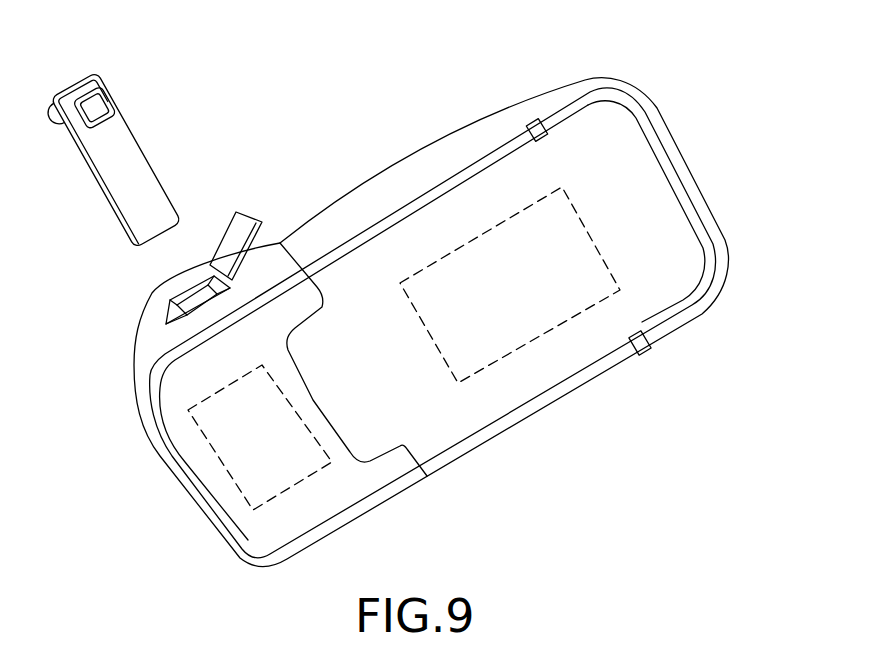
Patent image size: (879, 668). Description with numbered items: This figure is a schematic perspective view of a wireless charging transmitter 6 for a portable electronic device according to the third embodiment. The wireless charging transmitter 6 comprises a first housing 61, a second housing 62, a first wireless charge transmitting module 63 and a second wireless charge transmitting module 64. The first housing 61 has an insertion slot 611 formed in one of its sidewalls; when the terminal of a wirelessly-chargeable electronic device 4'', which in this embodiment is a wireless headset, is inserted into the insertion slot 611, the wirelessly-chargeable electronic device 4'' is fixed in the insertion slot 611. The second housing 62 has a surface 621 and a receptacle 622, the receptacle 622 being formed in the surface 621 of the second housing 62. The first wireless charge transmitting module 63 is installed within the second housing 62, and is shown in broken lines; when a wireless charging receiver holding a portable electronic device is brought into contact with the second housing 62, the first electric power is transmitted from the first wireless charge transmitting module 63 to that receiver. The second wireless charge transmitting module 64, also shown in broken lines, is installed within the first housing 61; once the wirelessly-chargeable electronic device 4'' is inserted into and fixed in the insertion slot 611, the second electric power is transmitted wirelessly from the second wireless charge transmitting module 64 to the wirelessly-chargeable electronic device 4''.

The wireless charging transmitter 6 is at (590, 63).
The wirelessly-chargeable electronic device 4'' is at (120, 162).
The first housing 61 is at (333, 490).
The insertion slot 611 is at (187, 303).
The second housing 62 is at (597, 333).
The surface 621 is at (657, 197).
The receptacle 622 is at (678, 243).
The first wireless charge transmitting module 63 is at (507, 233).
The second wireless charge transmitting module 64 is at (238, 450).